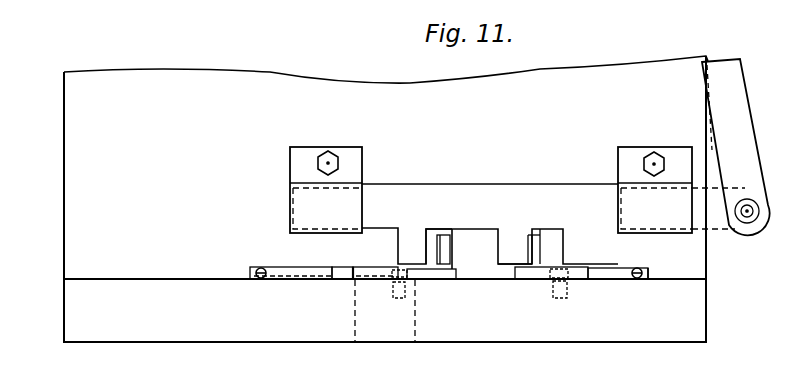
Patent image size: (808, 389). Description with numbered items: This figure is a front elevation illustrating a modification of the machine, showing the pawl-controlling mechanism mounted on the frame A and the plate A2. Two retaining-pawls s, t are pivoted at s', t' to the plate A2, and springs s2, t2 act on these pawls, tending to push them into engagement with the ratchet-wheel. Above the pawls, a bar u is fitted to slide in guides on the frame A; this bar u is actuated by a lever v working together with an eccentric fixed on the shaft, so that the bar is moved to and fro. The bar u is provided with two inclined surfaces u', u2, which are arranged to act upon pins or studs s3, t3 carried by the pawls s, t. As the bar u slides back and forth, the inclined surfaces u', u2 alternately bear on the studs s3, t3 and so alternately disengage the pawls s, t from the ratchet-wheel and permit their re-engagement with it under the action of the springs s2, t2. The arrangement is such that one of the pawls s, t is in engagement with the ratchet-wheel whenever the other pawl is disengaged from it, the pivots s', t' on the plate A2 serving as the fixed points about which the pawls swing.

The frame A is at (386, 199).
The plate A2 is at (385, 296).
The lever v is at (731, 147).
The bar u is at (490, 224).
The inclined surface u2 is at (437, 236).
The inclined surface u' is at (559, 249).
The pin or stud s3 is at (451, 243).
The retaining-pawl t is at (402, 255).
The spring t2 is at (283, 267).
The pivot t' is at (380, 272).
The pin or stud t3 is at (527, 241).
The retaining-pawl s is at (551, 281).
The pivot s' is at (618, 264).
The spring s2 is at (641, 266).